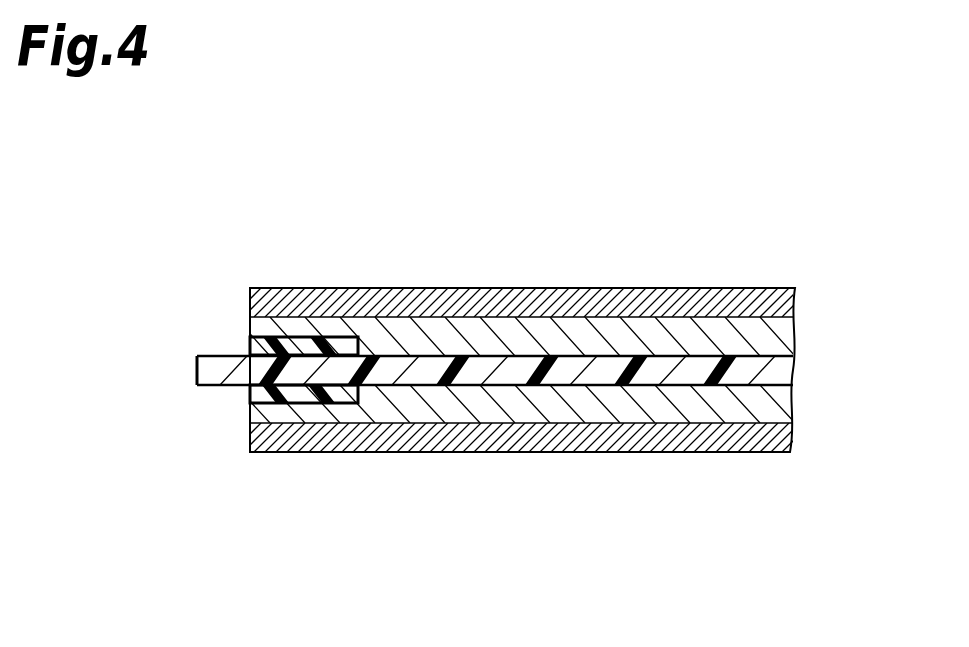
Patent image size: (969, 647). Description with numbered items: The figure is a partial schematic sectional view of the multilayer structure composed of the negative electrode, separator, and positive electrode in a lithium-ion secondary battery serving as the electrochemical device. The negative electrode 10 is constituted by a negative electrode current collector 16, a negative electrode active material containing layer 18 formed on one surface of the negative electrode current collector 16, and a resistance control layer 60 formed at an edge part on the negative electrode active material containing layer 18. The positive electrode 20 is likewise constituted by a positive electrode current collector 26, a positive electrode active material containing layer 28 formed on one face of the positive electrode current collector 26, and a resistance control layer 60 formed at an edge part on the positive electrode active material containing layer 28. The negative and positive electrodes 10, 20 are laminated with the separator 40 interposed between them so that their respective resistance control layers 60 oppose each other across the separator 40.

The negative electrode 10 is at (103, 278).
The negative electrode current collector 16 is at (252, 298).
The negative electrode active material containing layer 18 is at (253, 325).
The resistance control layer 60 is at (250, 344).
The separator 40 is at (780, 368).
The positive electrode 20 is at (103, 390).
The positive electrode active material containing layer 28 is at (253, 410).
The positive electrode current collector 26 is at (253, 435).